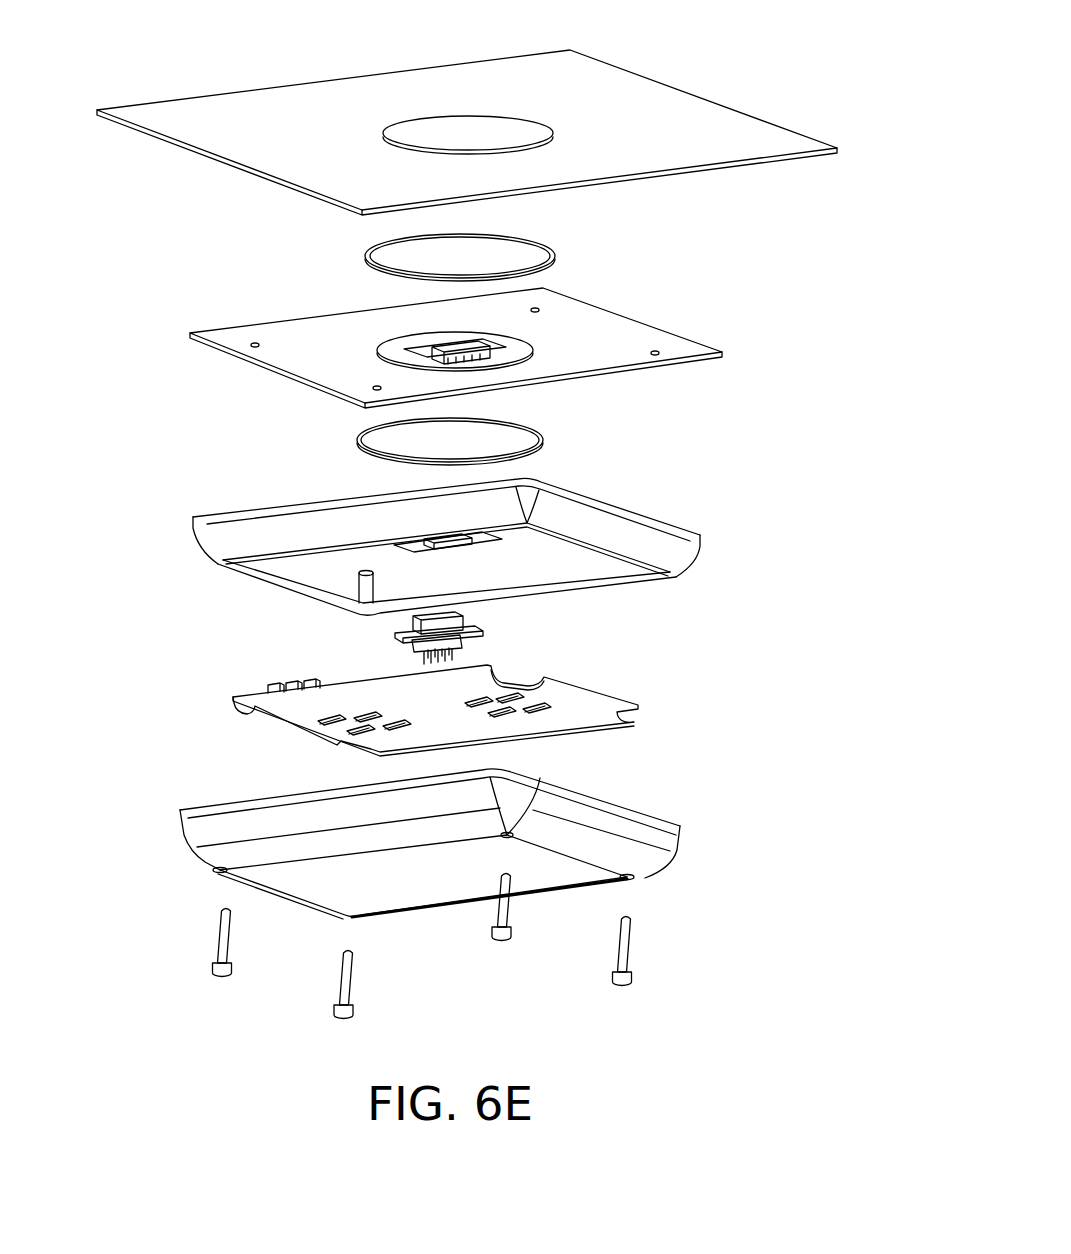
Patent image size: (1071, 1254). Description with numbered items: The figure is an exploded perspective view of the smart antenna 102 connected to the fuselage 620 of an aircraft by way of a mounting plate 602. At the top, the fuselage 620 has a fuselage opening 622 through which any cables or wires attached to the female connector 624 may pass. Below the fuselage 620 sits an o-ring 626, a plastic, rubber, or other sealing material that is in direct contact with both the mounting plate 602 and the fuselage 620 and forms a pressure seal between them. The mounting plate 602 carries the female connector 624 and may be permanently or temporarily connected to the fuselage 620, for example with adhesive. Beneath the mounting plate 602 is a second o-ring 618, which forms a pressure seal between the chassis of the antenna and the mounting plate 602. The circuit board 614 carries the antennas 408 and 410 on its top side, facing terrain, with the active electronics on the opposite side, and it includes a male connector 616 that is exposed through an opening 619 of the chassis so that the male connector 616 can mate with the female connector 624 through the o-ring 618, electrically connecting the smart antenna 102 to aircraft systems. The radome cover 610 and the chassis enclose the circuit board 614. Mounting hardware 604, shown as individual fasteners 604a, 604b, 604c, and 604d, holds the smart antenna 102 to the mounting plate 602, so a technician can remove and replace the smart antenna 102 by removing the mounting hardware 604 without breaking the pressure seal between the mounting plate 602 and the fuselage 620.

The smart antenna 102 is at (148, 455).
The fuselage 620 is at (643, 90).
The fuselage opening 622 is at (512, 127).
The o-ring 626 is at (548, 252).
The mounting plate 602 is at (622, 318).
The female connector 624 is at (463, 350).
The o-ring 618 is at (542, 447).
The mounting hardware 604 is at (610, 513).
The opening 619 is at (442, 542).
The male connector 616 is at (452, 643).
The circuit board 614 is at (267, 700).
The antenna 410 is at (532, 700).
The antenna 408 is at (370, 722).
The radome cover 610 is at (582, 800).
The mounting hardware 604a is at (622, 953).
The mounting hardware 604b is at (343, 993).
The mounting hardware 604c is at (225, 960).
The mounting hardware 604d is at (498, 930).